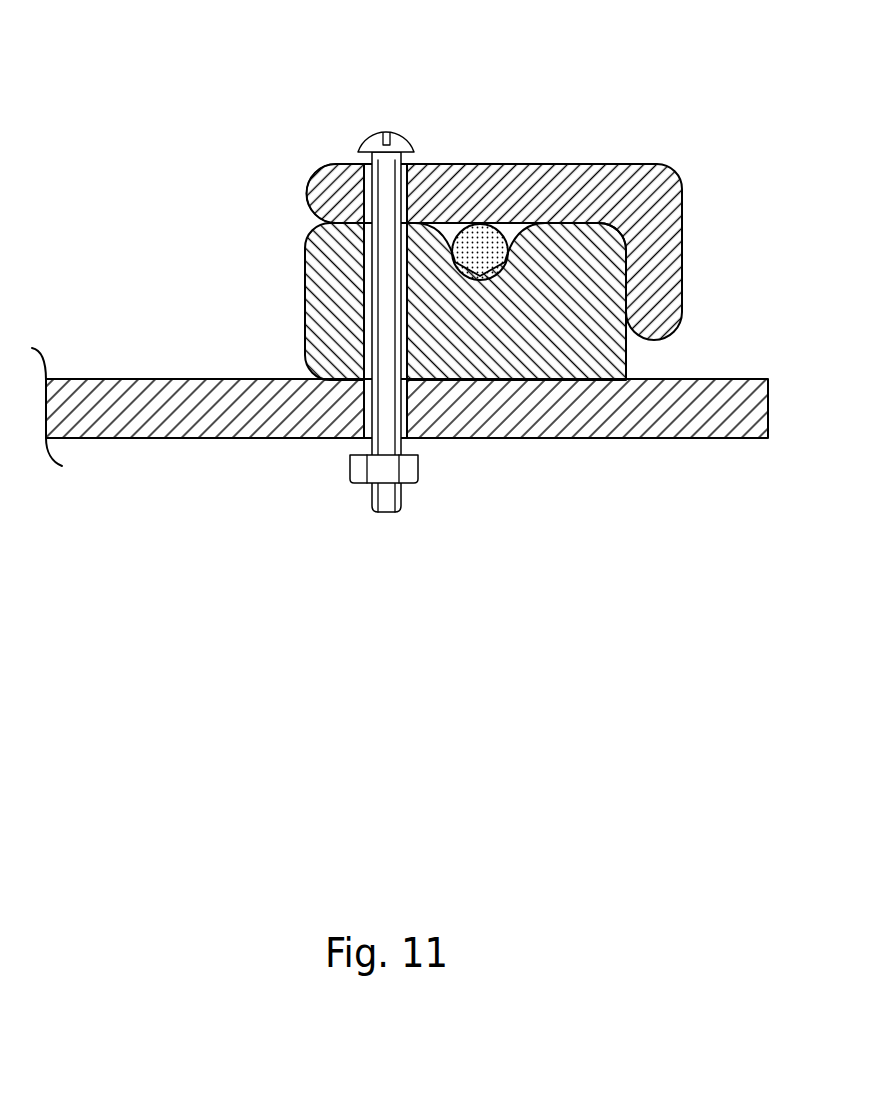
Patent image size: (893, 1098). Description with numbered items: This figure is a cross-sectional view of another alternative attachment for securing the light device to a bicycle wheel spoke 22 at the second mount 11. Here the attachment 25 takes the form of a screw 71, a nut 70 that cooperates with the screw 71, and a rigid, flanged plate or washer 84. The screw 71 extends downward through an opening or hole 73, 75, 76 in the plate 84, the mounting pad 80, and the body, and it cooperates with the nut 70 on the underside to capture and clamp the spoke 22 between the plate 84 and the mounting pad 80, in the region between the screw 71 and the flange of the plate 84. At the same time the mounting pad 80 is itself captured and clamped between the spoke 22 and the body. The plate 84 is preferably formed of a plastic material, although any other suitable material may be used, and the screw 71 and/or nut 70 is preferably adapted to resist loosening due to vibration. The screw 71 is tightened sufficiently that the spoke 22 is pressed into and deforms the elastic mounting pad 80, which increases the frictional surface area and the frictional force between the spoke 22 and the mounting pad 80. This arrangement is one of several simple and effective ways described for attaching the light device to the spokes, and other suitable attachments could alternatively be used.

The second mount 11 is at (312, 440).
The spoke 22 is at (495, 250).
The attachment 25 is at (628, 157).
The nut 70 is at (362, 485).
The screw 71 is at (380, 132).
The hole 73 is at (358, 180).
The hole 75 is at (338, 296).
The hole 76 is at (352, 407).
The mounting pad 80 is at (305, 320).
The flanged plate 84 is at (465, 180).